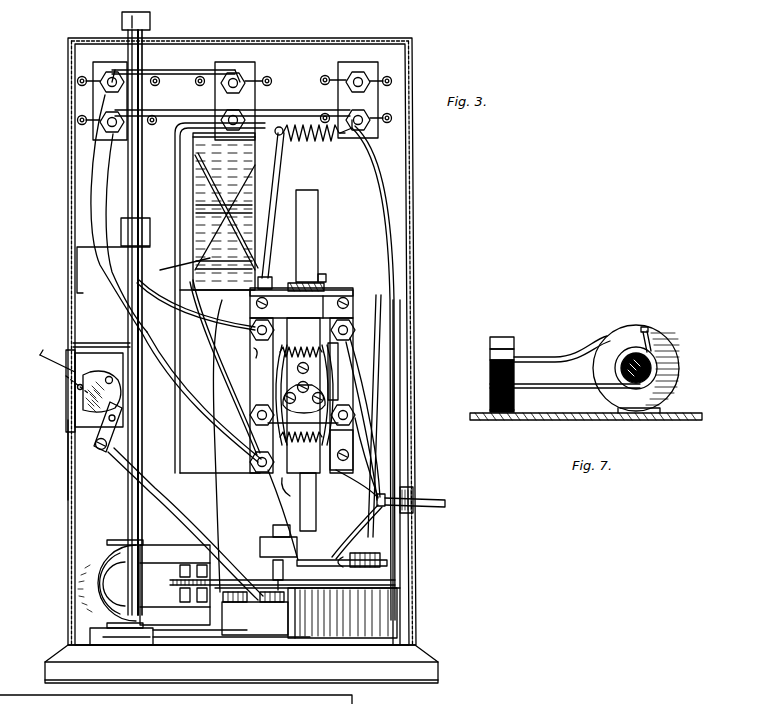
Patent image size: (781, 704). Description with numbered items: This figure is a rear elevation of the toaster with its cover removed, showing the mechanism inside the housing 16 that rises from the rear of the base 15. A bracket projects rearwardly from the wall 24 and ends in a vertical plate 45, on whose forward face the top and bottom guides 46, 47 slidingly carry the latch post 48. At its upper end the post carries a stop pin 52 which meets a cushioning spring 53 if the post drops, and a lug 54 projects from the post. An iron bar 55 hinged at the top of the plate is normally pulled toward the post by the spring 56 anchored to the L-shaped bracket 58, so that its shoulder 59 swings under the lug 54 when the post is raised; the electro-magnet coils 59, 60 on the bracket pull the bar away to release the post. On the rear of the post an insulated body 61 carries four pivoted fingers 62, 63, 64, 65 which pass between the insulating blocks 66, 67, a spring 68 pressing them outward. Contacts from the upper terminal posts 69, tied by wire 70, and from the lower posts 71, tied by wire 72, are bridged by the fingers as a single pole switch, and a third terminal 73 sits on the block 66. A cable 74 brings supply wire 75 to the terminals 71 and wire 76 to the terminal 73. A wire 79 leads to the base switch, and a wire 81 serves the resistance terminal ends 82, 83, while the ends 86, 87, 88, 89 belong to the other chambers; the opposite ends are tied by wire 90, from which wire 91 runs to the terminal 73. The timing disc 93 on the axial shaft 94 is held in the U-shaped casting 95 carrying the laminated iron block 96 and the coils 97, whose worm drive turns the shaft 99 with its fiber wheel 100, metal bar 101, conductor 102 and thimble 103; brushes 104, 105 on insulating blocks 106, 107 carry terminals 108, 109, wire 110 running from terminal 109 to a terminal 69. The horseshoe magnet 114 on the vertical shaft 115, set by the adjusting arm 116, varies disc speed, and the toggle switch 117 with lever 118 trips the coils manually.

In FIG. 3, the base 15 is at (60, 660).
In FIG. 3, the housing 16 is at (70, 483).
In FIG. 3, the wall 24 is at (404, 214).
In FIG. 3, the plate 45 is at (368, 290).
In FIG. 3, the top guide 46 is at (345, 288).
In FIG. 3, the bottom guide 47 is at (282, 488).
In FIG. 3, the latch post 48 is at (318, 228).
In FIG. 3, the stop pin 52 is at (326, 272).
In FIG. 3, the spring 53 is at (324, 278).
In FIG. 3, the lug 54 is at (300, 190).
In FIG. 3, the iron bar 55 is at (284, 165).
In FIG. 3, the spring 56 is at (323, 143).
In FIG. 3, the L-shaped bracket 58 is at (170, 170).
In FIG. 3, the shoulder 59 is at (215, 175).
In FIG. 3, the coil 60 is at (178, 266).
In FIG. 3, the body 61 is at (282, 395).
In FIG. 3, the finger 62 is at (276, 372).
In FIG. 3, the finger 63 is at (338, 366).
In FIG. 3, the finger 64 is at (250, 440).
In FIG. 3, the finger 65 is at (341, 450).
In FIG. 3, the insulating block 66 is at (240, 350).
In FIG. 3, the insulating block 67 is at (340, 468).
In FIG. 3, the spring 68 is at (298, 460).
In FIG. 3, the terminal post 69 is at (250, 330).
In FIG. 3, the wire 70 is at (292, 318).
In FIG. 3, the terminal post 71 is at (250, 412).
In FIG. 3, the wire 72 is at (303, 415).
In FIG. 3, the terminal 73 is at (250, 462).
In FIG. 3, the cable 74 is at (425, 490).
In FIG. 3, the wire 75 is at (385, 490).
In FIG. 3, the wire 76 is at (368, 510).
In FIG. 3, the wire 79 is at (400, 550).
In FIG. 3, the wire 81 is at (392, 165).
In FIG. 3, the terminal end 82 is at (327, 74).
In FIG. 3, the terminal end 83 is at (378, 72).
In FIG. 3, the terminal end 86 is at (90, 72).
In FIG. 3, the terminal end 87 is at (152, 86).
In FIG. 3, the terminal end 88 is at (204, 86).
In FIG. 3, the terminal end 89 is at (262, 75).
In FIG. 3, the wire 90 is at (310, 104).
In FIG. 3, the wire 91 is at (170, 372).
In FIG. 3, the disc 93 is at (390, 586).
In FIG. 3, the axial shaft 94 is at (268, 566).
In FIG. 3, the U-shaped casting 95 is at (260, 548).
In FIG. 3, the laminated iron block 96 is at (352, 562).
In FIG. 3, the electro-magnet coils 97 is at (385, 624).
In FIG. 7, the electro-magnet coils 97 is at (533, 420).
In FIG. 7, the shaft 99 is at (679, 372).
In FIG. 7, the fiber wheel 100 is at (665, 402).
In FIG. 7, the metal bar 101 is at (648, 330).
In FIG. 7, the electrical conductor 102 is at (648, 353).
In FIG. 7, the metal thimble 103 is at (655, 358).
In FIG. 7, the brush 104 is at (565, 357).
In FIG. 7, the brush 105 is at (578, 385).
In FIG. 3, the insulating block 106 is at (205, 627).
In FIG. 7, the insulating block 106 is at (490, 370).
In FIG. 3, the insulating block 107 is at (230, 640).
In FIG. 7, the insulating block 107 is at (490, 404).
In FIG. 3, the terminal 108 is at (250, 467).
In FIG. 3, the terminal 109 is at (271, 606).
In FIG. 7, the terminal 109 is at (502, 337).
In FIG. 3, the wire 110 is at (330, 560).
In FIG. 3, the horseshoe type magnet 114 is at (112, 572).
In FIG. 3, the vertical shaft 115 is at (142, 52).
In FIG. 3, the adjusting arm 116 is at (150, 21).
In FIG. 3, the toggle switch 117 is at (95, 412).
In FIG. 3, the switch lever 118 is at (45, 352).